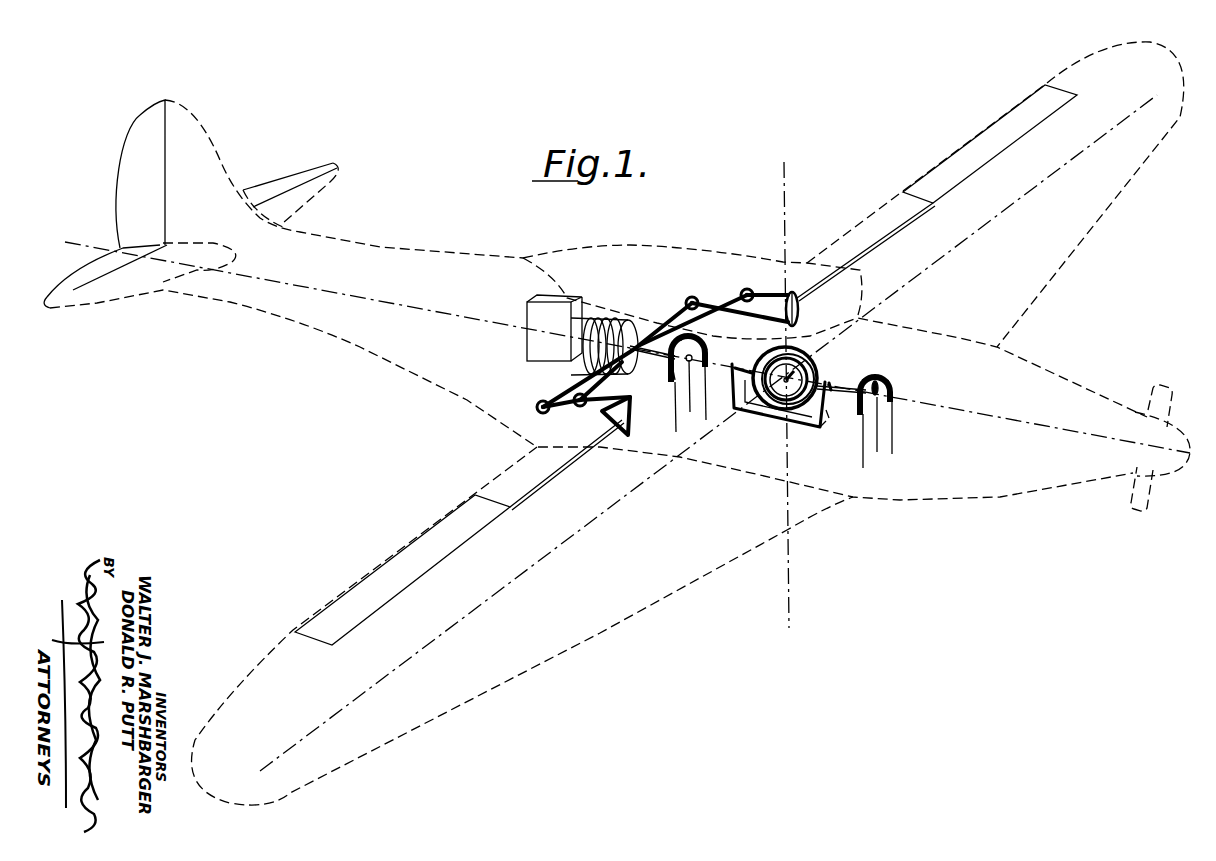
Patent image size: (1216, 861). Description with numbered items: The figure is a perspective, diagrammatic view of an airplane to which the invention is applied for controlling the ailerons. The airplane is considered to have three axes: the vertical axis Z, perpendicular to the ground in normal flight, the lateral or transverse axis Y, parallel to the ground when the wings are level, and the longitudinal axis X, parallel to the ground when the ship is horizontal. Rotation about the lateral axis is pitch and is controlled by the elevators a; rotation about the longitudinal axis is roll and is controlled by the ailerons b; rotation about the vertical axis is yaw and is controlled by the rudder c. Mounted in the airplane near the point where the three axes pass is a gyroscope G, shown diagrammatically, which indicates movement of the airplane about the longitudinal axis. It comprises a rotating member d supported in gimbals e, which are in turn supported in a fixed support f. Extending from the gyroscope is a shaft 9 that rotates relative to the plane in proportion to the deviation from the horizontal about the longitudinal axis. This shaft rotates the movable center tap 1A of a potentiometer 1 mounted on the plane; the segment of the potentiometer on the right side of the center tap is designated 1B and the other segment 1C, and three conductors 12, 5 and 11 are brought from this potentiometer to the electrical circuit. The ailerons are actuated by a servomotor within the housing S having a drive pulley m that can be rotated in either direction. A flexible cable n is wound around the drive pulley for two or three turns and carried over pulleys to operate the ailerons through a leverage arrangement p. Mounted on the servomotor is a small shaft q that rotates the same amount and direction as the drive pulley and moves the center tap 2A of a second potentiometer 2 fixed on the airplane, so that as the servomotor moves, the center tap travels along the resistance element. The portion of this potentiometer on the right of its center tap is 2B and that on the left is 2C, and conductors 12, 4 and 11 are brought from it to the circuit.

The elevators a is at (263, 187).
The ailerons b is at (947, 170).
The rudder c is at (140, 120).
The rotating member d is at (797, 413).
The gimbals e is at (766, 403).
The fixed support f is at (828, 424).
The gyroscope G is at (826, 363).
The drive pulley m is at (565, 355).
The flexible cable n is at (668, 322).
The leverage arrangement p is at (802, 314).
The small shaft q is at (651, 357).
The housing S is at (554, 328).
The potentiometer 1 is at (893, 378).
The movable center tap 1A is at (880, 364).
The potentiometer segment 1B is at (893, 391).
The potentiometer segment 1C is at (830, 413).
The potentiometer 2 is at (710, 351).
The movable center tap 2A is at (706, 339).
The potentiometer portion 2B is at (711, 352).
The potentiometer portion 2C is at (672, 386).
The conductor 4 is at (691, 395).
The conductor 5 is at (879, 434).
The shaft 9 is at (849, 387).
The conductor 11 is at (806, 423).
The conductor 12 is at (772, 437).
The longitudinal axis X is at (624, 348).
The lateral axis Y is at (703, 437).
The vertical axis Z is at (786, 400).